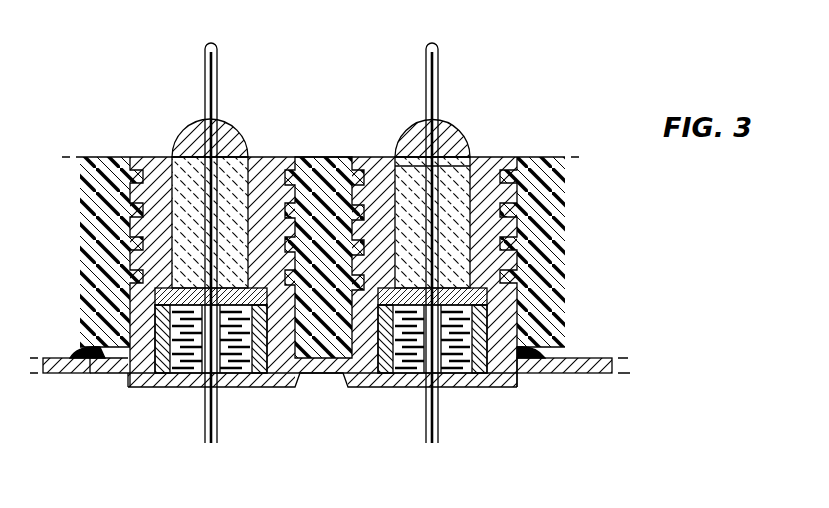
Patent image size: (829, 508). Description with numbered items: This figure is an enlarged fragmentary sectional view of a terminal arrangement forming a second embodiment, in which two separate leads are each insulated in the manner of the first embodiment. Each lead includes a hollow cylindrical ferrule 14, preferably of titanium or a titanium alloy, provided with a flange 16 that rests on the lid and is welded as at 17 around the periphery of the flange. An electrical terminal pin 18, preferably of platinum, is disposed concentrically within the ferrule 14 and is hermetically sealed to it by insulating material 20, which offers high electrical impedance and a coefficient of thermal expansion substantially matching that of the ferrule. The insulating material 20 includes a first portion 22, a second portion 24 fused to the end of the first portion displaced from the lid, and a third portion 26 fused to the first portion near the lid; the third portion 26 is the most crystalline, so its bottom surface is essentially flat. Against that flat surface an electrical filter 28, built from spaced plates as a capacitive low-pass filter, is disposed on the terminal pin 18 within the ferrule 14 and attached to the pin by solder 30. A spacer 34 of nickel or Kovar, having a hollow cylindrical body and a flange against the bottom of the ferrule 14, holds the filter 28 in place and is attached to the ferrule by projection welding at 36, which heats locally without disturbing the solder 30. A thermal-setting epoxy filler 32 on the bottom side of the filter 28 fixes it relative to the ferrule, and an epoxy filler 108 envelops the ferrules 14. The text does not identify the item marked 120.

The ferrule 14 is at (274, 173).
The flange 16 is at (535, 375).
The weld 17 is at (70, 363).
The electrical terminal pin 18 is at (214, 49).
The insulating material 20 is at (375, 110).
The first portion 22 is at (235, 192).
The second portion 24 is at (193, 137).
The third portion 26 is at (187, 292).
The electrical filter 28 is at (243, 374).
The solder 30 is at (458, 374).
The filler 32 is at (196, 389).
The spacer 34 is at (147, 389).
The projection weld 36 is at (120, 366).
The filler 108 is at (96, 249).
The direction arrow 120 is at (765, 500).